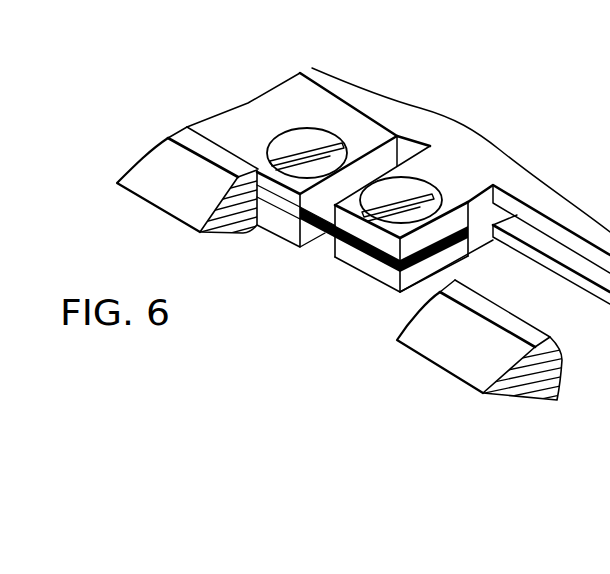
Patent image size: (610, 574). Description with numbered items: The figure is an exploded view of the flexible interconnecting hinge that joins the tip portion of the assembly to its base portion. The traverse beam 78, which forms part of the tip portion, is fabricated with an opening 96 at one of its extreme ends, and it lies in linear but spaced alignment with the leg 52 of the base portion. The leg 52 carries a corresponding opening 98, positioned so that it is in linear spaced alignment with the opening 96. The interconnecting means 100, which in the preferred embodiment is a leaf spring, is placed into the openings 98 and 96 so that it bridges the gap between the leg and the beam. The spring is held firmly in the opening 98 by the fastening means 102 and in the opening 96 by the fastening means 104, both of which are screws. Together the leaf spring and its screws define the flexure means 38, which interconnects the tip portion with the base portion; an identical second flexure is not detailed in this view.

The leg 52 is at (266, 133).
The fastening means 102 is at (322, 133).
The fastening means 104 is at (405, 185).
The traverse beam 78 is at (463, 199).
The opening 98 is at (280, 214).
The interconnecting means 100 is at (328, 234).
The flexure means 38 is at (329, 248).
The opening 96 is at (408, 267).